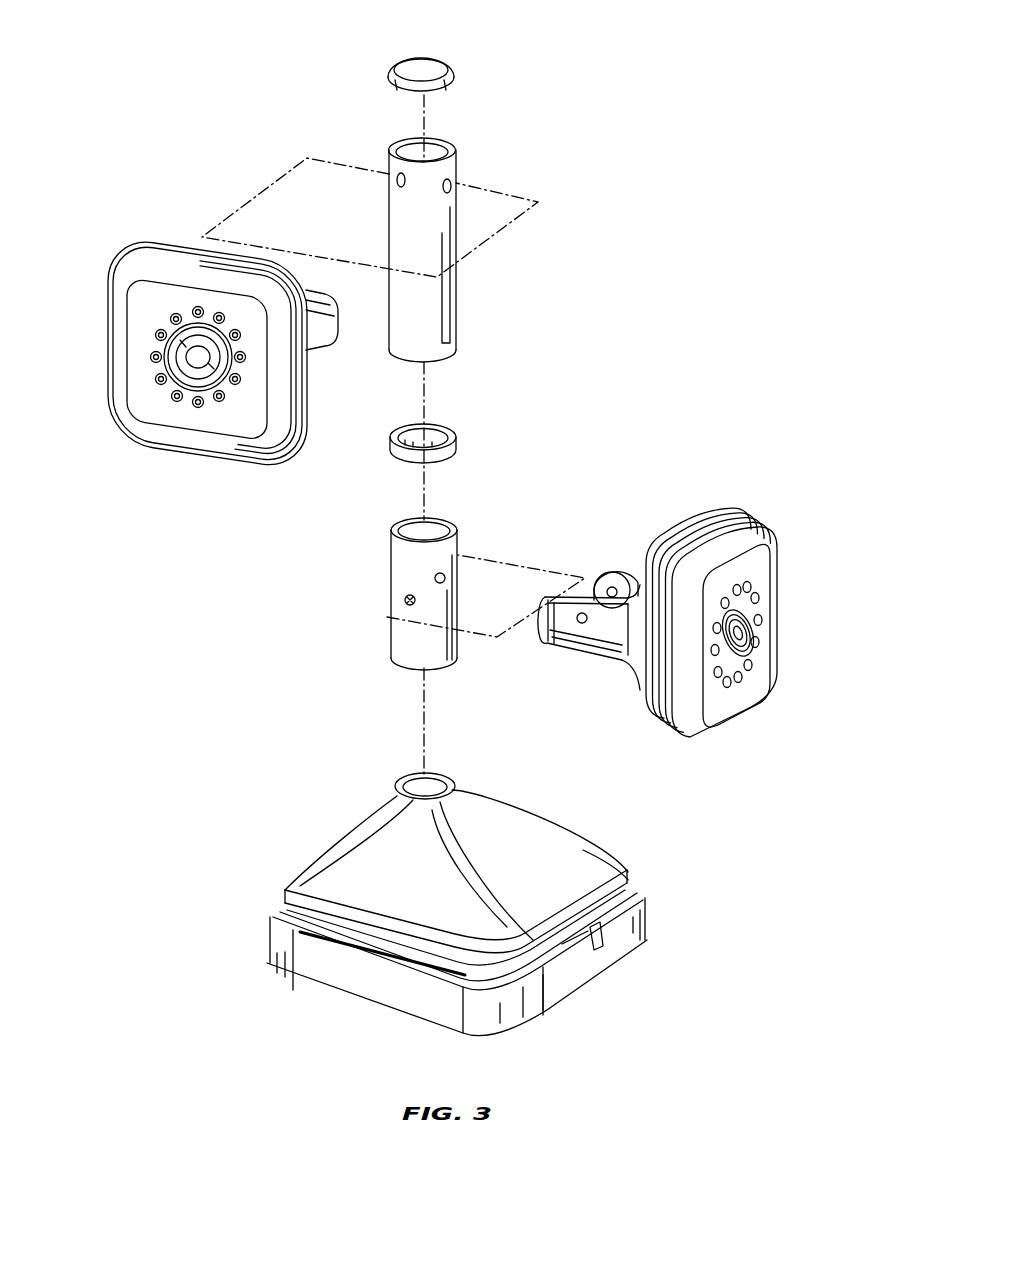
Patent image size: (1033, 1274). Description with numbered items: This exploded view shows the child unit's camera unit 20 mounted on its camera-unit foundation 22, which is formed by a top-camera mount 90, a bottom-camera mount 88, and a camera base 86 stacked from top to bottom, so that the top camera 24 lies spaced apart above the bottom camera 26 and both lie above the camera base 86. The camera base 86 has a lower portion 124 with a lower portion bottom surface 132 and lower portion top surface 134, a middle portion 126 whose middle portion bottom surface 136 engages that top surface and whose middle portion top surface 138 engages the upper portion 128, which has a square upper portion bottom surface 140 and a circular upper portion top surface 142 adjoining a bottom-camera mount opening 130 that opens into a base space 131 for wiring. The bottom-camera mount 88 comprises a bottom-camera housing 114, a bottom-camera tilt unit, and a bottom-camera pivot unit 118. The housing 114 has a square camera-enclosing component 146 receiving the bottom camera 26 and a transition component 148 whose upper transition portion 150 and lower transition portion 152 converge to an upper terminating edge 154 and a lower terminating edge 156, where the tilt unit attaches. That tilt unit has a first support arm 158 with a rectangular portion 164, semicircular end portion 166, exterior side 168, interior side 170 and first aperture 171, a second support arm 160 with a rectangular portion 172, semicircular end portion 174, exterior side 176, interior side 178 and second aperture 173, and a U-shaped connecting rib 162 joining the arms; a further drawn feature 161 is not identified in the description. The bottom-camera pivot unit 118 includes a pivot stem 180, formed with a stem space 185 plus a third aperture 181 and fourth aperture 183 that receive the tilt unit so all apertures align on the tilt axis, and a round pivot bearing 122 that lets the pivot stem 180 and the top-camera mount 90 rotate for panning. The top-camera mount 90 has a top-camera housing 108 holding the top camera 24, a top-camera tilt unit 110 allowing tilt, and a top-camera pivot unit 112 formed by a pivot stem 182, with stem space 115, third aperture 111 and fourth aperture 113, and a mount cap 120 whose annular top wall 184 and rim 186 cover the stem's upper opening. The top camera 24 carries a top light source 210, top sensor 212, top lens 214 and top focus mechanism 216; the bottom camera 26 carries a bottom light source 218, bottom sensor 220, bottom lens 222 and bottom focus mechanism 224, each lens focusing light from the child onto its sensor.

The camera unit 20 is at (590, 316).
The camera-unit foundation 22 is at (211, 826).
The top camera 24 is at (312, 395).
The bottom camera 26 is at (775, 510).
The camera base 86 is at (268, 922).
The bottom-camera mount 88 is at (385, 608).
The top-camera mount 90 is at (417, 362).
The top-camera housing 108 is at (213, 374).
The top-camera tilt unit 110 is at (337, 330).
The third aperture 111 is at (449, 182).
The top-camera pivot unit 112 is at (456, 238).
The fourth aperture 113 is at (398, 178).
The bottom-camera housing 114 is at (742, 615).
The stem space 115 is at (428, 158).
The bottom-camera pivot unit 118 is at (386, 600).
The mount cap 120 is at (456, 51).
The round pivot bearing 122 is at (462, 442).
The lower portion 124 is at (486, 949).
The middle portion 126 is at (622, 888).
The upper portion 128 is at (453, 836).
The bottom-camera mount opening 130 is at (420, 798).
The base space 131 is at (418, 776).
The lower portion bottom surface 132 is at (533, 1036).
The lower portion top surface 134 is at (596, 932).
The middle portion bottom surface 136 is at (570, 942).
The middle portion top surface 138 is at (612, 878).
The upper portion bottom surface 140 is at (337, 903).
The upper portion top surface 142 is at (384, 759).
The camera-enclosing component 146 is at (668, 548).
The transition component 148 is at (660, 552).
The upper transition portion 150 is at (630, 572).
The lower transition portion 152 is at (640, 700).
The upper terminating edge 154 is at (630, 690).
The lower terminating edge 156 is at (611, 609).
The first support arm 158 is at (548, 645).
The second support arm 160 is at (598, 570).
The arm assembly 161 is at (535, 632).
The connecting rib 162 is at (605, 560).
The substantially rectangular portion 164 is at (580, 665).
The substantially semicircular end portion 166 is at (557, 662).
The exterior side 168 is at (560, 648).
The interior side 170 is at (583, 580).
The first aperture 171 is at (546, 600).
The substantially rectangular portion 172 is at (638, 570).
The second aperture 173 is at (762, 552).
The substantially semicircular end portion 174 is at (585, 575).
The exterior side 176 is at (624, 566).
The interior side 178 is at (595, 565).
The pivot stem 180 is at (404, 584).
The third aperture 181 is at (408, 603).
The pivot stem 182 is at (426, 225).
The fourth aperture 183 is at (442, 575).
The annular top wall 184 is at (412, 70).
The stem space 185 is at (410, 535).
The rim 186 is at (452, 84).
The top light source 210 is at (149, 403).
The top sensor 212 is at (170, 323).
The top lens 214 is at (174, 395).
The top focus mechanism 216 is at (187, 357).
The bottom light source 218 is at (740, 683).
The bottom sensor 220 is at (758, 645).
The bottom lens 222 is at (752, 632).
The bottom focus mechanism 224 is at (748, 622).